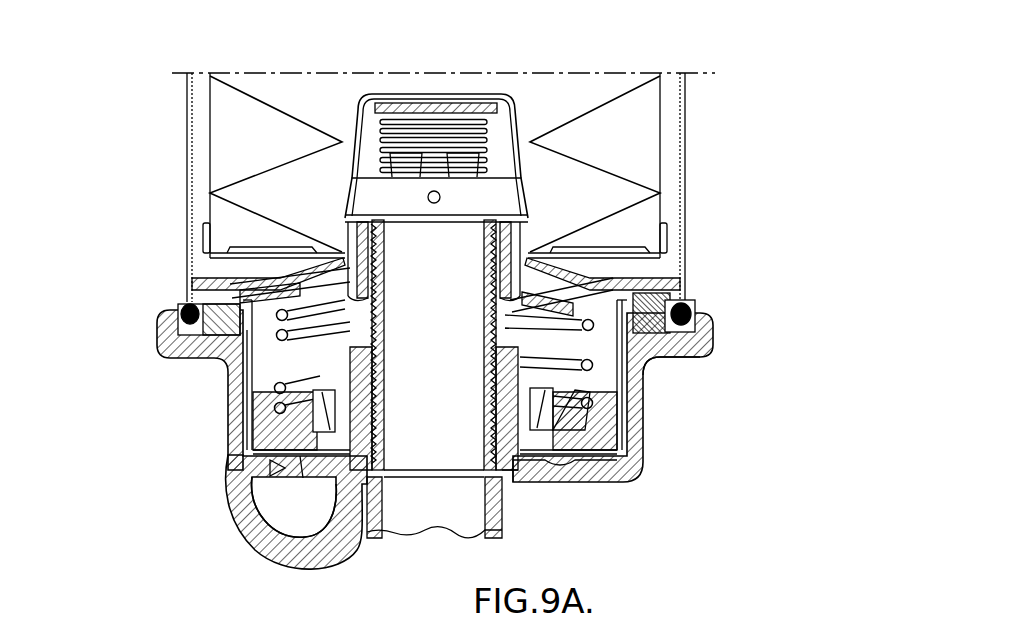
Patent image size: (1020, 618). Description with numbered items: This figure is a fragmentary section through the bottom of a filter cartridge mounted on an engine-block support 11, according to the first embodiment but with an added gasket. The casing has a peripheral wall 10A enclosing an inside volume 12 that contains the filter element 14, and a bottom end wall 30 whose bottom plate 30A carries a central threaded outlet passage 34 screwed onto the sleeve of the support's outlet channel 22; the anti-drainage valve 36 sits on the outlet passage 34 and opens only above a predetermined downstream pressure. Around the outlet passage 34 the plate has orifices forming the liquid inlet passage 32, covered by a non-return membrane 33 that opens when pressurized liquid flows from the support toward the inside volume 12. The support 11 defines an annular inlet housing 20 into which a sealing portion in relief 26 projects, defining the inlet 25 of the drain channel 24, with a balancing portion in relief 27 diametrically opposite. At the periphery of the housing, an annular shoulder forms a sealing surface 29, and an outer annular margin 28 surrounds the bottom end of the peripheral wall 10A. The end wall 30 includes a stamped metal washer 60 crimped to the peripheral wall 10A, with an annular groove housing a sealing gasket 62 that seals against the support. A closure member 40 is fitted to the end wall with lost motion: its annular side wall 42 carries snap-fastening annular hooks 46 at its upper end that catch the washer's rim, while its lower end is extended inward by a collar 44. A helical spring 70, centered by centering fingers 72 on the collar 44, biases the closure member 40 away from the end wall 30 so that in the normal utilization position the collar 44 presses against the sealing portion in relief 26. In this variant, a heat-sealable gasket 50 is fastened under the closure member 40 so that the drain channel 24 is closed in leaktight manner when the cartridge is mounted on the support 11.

The peripheral wall 10A is at (683, 213).
The inside volume 12 is at (668, 162).
The filter element 14 is at (650, 113).
The anti-drainage valve 36 is at (505, 122).
The outlet passage 34 is at (490, 315).
The bottom plate 30A is at (368, 312).
The outlet channel 22 is at (437, 508).
The liquid inlet passage 32 is at (268, 278).
The non-return membrane 33 is at (665, 257).
The annular hook 46 is at (237, 337).
The bottom end wall 30 is at (660, 290).
The outer annular margin 28 is at (157, 317).
The sealing surface 29 is at (180, 350).
The annular inlet housing 20 is at (310, 358).
The support 11 is at (242, 420).
The helical spring 70 is at (242, 433).
The inwardly-directed collar 44 is at (557, 440).
The balancing portion in relief 27 is at (580, 463).
The sealing portion in relief 26 is at (272, 469).
The inlet of the drain channel 25 is at (267, 493).
The drain channel 24 is at (302, 510).
The gasket 50 is at (303, 490).
The closure member 40 is at (620, 450).
The annular side wall 42 is at (620, 380).
The sealing gasket 62 is at (687, 357).
The stamped metal washer 60 is at (710, 335).
The centering fingers 72 is at (622, 467).